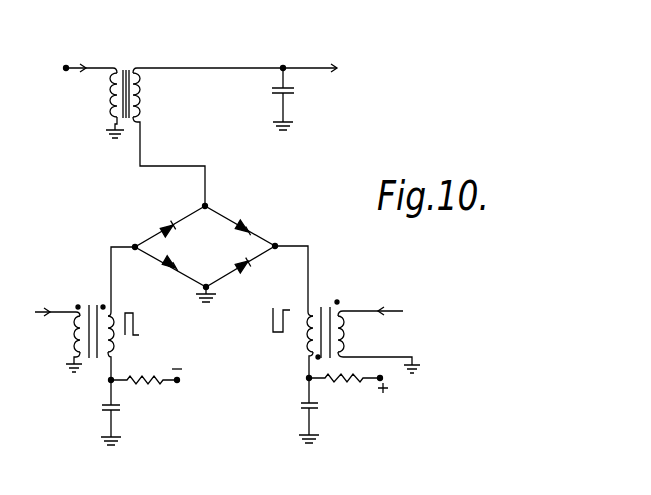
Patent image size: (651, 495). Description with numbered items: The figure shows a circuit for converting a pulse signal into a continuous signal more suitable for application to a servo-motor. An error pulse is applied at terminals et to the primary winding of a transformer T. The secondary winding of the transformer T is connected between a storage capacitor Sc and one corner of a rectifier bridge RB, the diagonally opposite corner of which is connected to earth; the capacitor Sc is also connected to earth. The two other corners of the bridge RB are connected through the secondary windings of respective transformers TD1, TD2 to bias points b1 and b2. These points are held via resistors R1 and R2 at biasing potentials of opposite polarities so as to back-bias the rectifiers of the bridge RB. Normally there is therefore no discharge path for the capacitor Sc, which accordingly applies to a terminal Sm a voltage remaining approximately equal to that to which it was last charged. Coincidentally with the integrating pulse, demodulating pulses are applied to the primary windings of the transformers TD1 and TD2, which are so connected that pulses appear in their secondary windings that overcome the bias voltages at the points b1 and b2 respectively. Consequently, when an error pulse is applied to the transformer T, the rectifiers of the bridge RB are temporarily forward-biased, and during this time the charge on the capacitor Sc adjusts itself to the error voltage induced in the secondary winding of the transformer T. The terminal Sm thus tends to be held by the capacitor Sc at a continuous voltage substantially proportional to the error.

The error pulse terminals et is at (90, 60).
The transformer T is at (155, 126).
The output terminal Sm is at (246, 57).
The storage capacitor Sc is at (295, 99).
The rectifier bridge RB is at (209, 258).
The first demodulating transformer TD1 is at (89, 300).
The second demodulating transformer TD2 is at (328, 296).
The first bias resistor R1 is at (146, 389).
The second bias resistor R2 is at (354, 370).
The first bias point b1 is at (106, 385).
The second bias point b2 is at (314, 385).